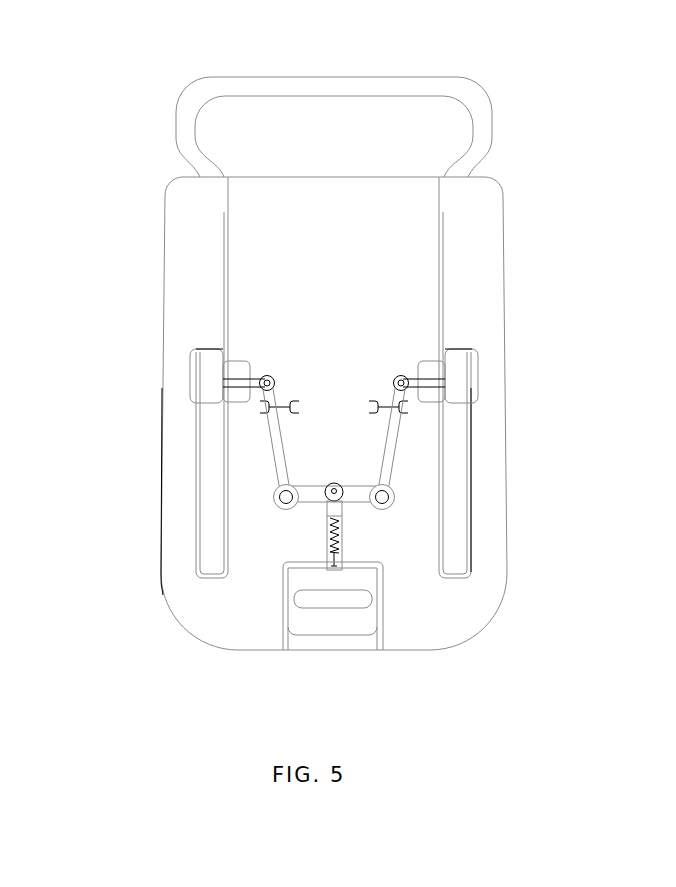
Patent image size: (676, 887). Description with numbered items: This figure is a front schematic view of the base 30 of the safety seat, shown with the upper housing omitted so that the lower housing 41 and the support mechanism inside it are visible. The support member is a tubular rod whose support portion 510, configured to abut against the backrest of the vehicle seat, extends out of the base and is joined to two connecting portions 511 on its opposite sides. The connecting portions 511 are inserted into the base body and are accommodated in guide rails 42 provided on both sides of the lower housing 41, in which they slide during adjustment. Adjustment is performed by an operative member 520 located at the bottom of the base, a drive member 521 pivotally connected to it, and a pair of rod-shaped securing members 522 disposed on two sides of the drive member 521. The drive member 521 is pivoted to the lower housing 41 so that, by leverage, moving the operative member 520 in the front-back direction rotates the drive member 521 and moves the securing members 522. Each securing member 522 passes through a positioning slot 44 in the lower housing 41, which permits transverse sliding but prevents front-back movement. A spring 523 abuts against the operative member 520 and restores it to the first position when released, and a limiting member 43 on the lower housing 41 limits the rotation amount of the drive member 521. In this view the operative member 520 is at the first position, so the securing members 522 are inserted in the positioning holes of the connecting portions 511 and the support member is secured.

The base 30 is at (118, 92).
The support portion 510 is at (430, 83).
The connecting portions 511 is at (215, 374).
The positioning slots 44 is at (243, 389).
The securing members 522 is at (251, 386).
The drive member 521 is at (278, 462).
The spring 523 is at (326, 531).
The operative member 520 is at (316, 614).
The lower housing 41 is at (450, 612).
The guide rails 42 is at (450, 500).
The limiting member 43 is at (407, 412).